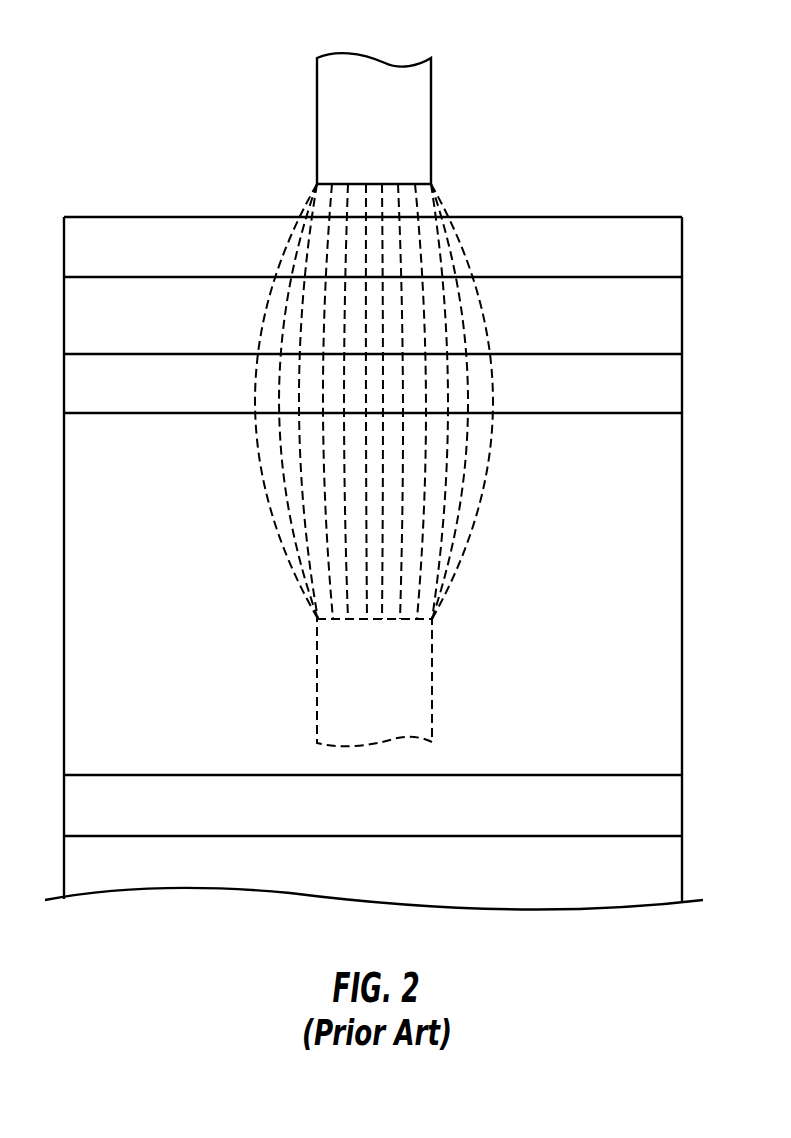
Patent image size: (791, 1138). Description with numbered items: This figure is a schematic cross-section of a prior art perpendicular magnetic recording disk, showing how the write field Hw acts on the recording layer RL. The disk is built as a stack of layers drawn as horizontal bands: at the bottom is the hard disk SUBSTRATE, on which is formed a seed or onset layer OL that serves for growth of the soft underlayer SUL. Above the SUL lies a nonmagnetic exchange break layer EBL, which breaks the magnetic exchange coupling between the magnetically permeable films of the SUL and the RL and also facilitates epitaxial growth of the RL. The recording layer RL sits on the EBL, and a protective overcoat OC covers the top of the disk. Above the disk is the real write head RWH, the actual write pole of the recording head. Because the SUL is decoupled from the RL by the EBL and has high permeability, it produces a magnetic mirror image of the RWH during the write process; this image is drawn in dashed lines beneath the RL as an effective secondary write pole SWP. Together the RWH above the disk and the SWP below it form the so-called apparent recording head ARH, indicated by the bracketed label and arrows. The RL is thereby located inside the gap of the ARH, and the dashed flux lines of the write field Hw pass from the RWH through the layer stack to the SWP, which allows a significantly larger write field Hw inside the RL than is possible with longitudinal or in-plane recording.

The real write head RWH is at (374, 118).
The write field Hw is at (478, 324).
The secondary write pole SWP is at (374, 682).
The apparent recording head ARH is at (293, 609).
The protective overcoat OC is at (373, 247).
The recording layer RL is at (373, 326).
The exchange break layer EBL is at (373, 390).
The soft underlayer SUL is at (373, 601).
The seed or onset layer OL is at (373, 812).
The hard disk substrate SUBSTRATE is at (374, 879).